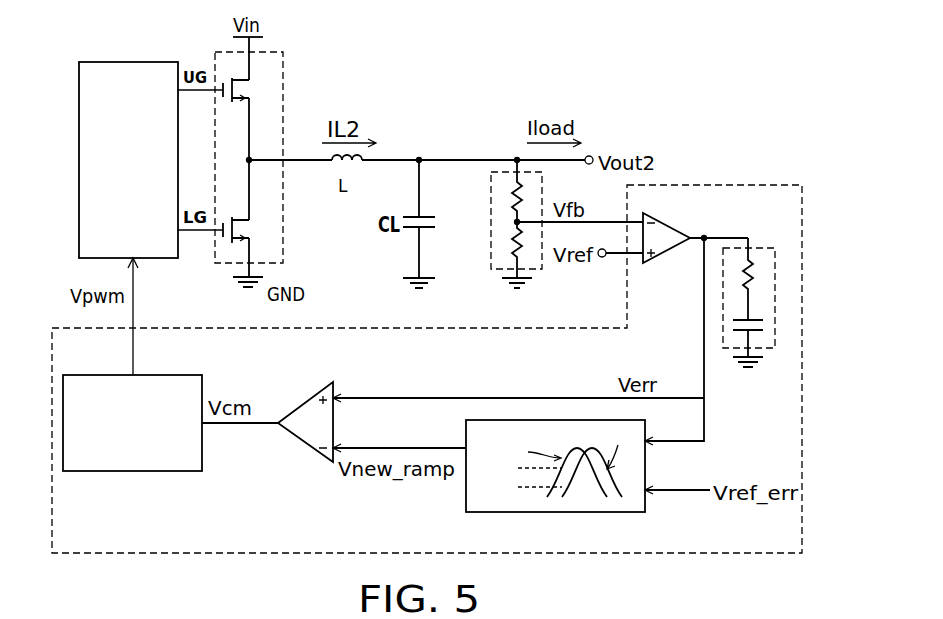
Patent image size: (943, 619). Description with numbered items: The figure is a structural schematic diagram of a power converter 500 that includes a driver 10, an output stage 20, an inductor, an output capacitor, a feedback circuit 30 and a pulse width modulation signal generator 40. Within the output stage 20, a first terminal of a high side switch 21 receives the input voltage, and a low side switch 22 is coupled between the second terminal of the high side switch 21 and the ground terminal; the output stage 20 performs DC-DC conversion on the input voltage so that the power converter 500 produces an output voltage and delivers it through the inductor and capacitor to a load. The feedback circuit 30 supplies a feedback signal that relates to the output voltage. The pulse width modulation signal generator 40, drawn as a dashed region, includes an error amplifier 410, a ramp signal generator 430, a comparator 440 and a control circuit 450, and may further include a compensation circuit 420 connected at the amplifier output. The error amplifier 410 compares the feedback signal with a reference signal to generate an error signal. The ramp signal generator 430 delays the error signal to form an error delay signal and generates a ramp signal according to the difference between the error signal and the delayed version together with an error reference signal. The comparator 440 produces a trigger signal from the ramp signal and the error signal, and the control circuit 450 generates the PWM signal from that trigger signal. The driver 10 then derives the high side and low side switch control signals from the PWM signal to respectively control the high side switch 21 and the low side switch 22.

The driver 10 is at (130, 62).
The output stage 20 is at (283, 70).
The high side switch 21 is at (249, 89).
The low side switch 22 is at (249, 230).
The feedback circuit 30 is at (495, 160).
The pulse width modulation (PWM) signal generator 40 is at (722, 185).
The error amplifier 410 is at (670, 223).
The compensation circuit 420 is at (767, 247).
The ramp signal generator 430 is at (466, 432).
The comparator 440 is at (307, 400).
The control circuit 450 is at (178, 373).
The power converter 500 is at (795, 610).